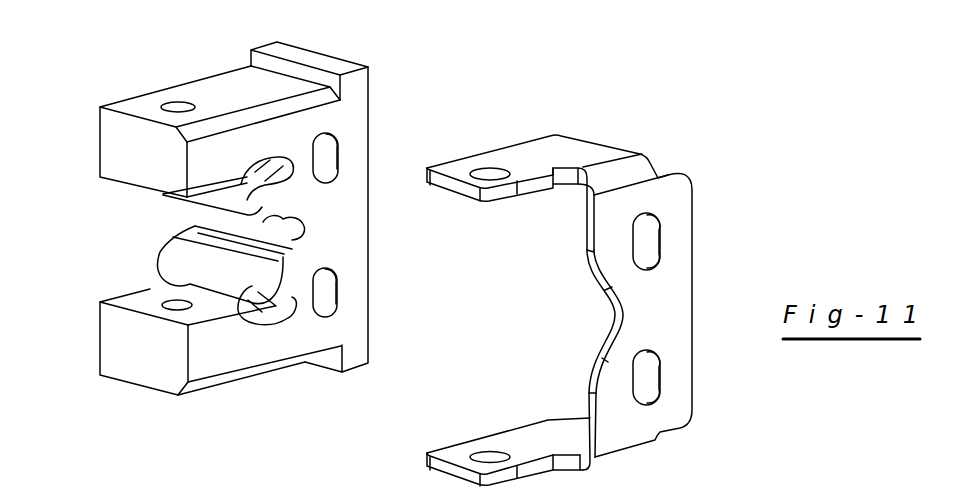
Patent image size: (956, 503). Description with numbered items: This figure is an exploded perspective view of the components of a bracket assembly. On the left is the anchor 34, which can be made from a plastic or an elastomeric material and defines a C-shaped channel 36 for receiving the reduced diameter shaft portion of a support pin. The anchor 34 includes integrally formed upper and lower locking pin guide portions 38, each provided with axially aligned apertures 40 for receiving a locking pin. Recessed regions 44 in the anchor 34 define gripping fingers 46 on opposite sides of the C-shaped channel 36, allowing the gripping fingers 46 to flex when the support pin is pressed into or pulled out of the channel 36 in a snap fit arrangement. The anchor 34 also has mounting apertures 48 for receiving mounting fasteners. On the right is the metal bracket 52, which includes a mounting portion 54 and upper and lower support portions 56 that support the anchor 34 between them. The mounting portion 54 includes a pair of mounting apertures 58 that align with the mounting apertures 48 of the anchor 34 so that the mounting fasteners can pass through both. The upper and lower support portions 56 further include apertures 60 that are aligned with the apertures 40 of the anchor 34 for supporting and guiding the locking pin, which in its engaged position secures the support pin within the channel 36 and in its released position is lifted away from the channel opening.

The anchor 34 is at (372, 118).
The C-shaped channel 36 is at (268, 257).
The locking pin guide portions 38 is at (118, 151).
The apertures 40 is at (176, 105).
The recessed regions 44 is at (287, 165).
The gripping fingers 46 is at (262, 206).
The mounting apertures 48 is at (326, 151).
The metal bracket 52 is at (614, 282).
The mounting portion 54 is at (668, 292).
The upper and lower support portions 56 is at (582, 153).
The mounting apertures 58 is at (658, 241).
The apertures 60 is at (500, 175).